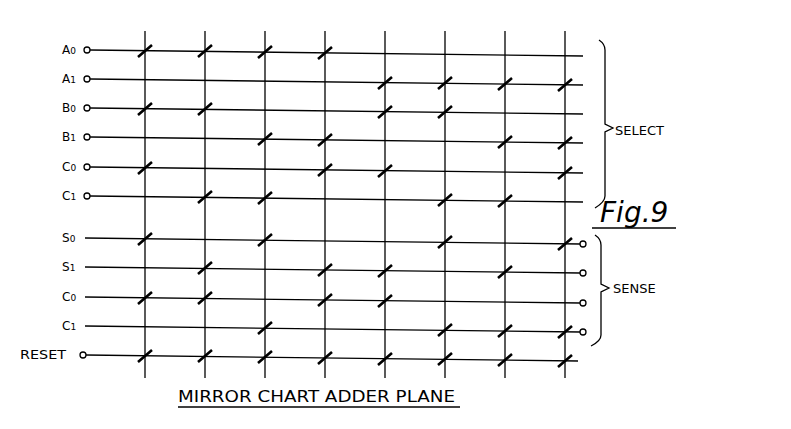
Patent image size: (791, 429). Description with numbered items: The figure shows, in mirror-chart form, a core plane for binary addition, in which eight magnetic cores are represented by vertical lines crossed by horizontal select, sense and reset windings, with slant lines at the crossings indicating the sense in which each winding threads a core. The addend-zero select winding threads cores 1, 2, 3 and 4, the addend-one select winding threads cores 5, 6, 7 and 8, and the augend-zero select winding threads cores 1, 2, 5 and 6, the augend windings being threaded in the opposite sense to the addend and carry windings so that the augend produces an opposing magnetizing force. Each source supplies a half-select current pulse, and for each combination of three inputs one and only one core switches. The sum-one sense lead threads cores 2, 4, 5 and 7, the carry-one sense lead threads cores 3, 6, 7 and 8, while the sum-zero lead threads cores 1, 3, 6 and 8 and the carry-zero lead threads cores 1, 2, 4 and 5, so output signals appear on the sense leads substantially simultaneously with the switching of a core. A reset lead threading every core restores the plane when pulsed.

The core 1 is at (145, 193).
The core 2 is at (205, 193).
The core 3 is at (265, 193).
The core 4 is at (325, 193).
The core 5 is at (385, 193).
The core 6 is at (445, 193).
The core 7 is at (505, 193).
The core 8 is at (565, 193).